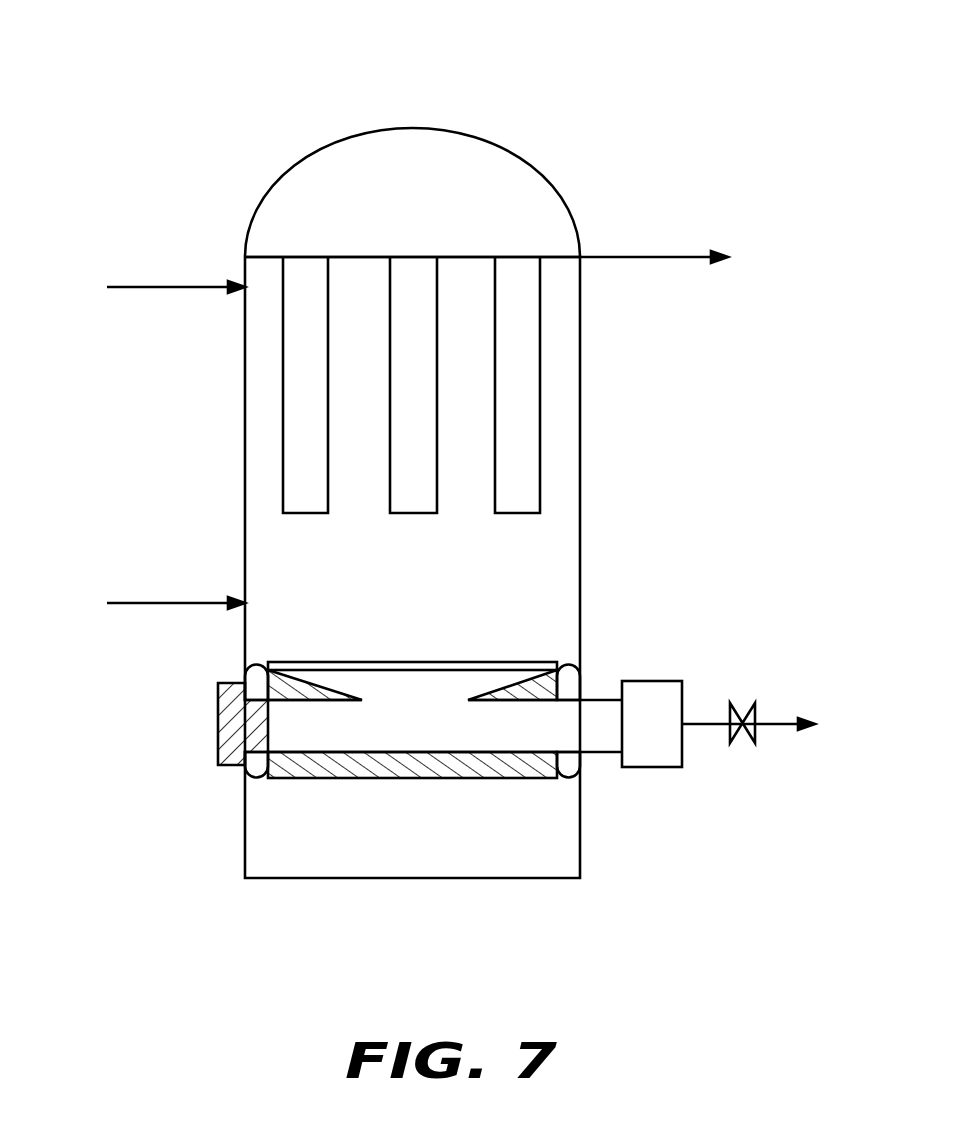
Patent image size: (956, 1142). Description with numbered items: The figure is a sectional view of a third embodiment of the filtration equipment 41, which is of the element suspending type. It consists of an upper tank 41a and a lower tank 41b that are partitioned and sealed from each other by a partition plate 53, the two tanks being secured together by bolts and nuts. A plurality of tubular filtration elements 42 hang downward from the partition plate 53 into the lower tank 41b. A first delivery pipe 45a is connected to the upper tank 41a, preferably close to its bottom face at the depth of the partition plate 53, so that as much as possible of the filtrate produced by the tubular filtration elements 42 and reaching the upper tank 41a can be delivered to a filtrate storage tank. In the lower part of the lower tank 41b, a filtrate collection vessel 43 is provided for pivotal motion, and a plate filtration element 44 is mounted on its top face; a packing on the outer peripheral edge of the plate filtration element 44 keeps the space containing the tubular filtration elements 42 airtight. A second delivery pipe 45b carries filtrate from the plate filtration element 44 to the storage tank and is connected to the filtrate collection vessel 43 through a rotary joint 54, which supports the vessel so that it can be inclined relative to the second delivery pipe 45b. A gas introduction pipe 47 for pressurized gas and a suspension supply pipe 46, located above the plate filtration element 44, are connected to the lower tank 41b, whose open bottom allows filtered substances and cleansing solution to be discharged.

The filtration equipment 41 is at (288, 118).
The upper tank 41a is at (275, 203).
The lower tank 41b is at (365, 878).
The tubular filtration elements 42 is at (530, 375).
The filtrate collection vessel 43 is at (418, 780).
The plate filtration element 44 is at (362, 663).
The first delivery pipe 45a is at (638, 257).
The second delivery pipe 45b is at (703, 720).
The suspension supply pipe 46 is at (152, 604).
The gas introduction pipe 47 is at (182, 290).
The partition plate 53 is at (467, 257).
The rotary joint 54 is at (670, 760).